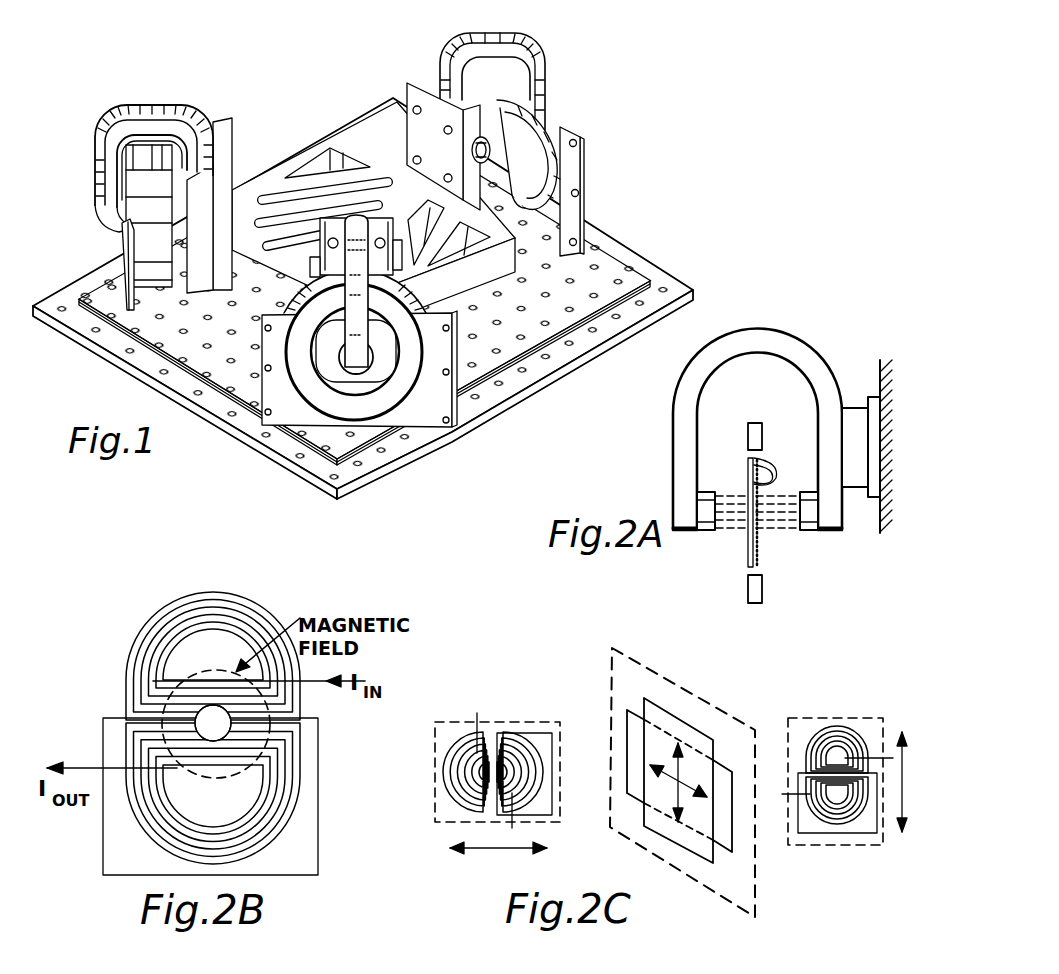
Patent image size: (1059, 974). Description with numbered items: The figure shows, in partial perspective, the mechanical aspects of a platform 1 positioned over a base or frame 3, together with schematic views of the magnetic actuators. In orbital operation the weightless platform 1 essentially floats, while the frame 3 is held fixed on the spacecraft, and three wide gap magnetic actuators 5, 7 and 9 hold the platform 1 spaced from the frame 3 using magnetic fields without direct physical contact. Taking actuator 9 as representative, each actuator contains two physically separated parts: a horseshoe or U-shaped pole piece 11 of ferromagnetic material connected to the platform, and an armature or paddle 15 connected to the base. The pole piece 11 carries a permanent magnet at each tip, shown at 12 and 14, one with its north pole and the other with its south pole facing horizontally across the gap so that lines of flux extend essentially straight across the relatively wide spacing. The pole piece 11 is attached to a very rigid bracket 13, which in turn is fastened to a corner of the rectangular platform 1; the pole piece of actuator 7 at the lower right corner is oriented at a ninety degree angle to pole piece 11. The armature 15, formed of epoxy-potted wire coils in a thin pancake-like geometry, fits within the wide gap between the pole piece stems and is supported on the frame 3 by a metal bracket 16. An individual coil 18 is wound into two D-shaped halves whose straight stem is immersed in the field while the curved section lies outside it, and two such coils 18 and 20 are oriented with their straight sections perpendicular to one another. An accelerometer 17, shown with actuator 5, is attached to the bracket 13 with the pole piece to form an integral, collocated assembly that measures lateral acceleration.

In FIG. 1, the platform 1 is at (314, 136).
In FIG. 2A, the platform 1 is at (879, 362).
In FIG. 1, the base or frame 3 is at (507, 382).
In FIG. 1, the wide gap magnetic actuator 5 is at (450, 42).
In FIG. 1, the wide gap magnetic actuator 7 is at (455, 436).
In FIG. 1, the wide gap magnetic actuator 9 is at (86, 152).
In FIG. 1, the horseshoe or U-shaped pole piece 11 is at (100, 200).
In FIG. 2A, the horseshoe or U-shaped pole piece 11 is at (675, 426).
In FIG. 2A, the permanent magnet 12 is at (802, 536).
In FIG. 2B, the permanent magnet 12 is at (150, 718).
In FIG. 1, the bracket 13 is at (228, 264).
In FIG. 2A, the bracket 13 is at (860, 495).
In FIG. 2A, the permanent magnet 14 is at (705, 536).
In FIG. 2B, the permanent magnet 14 is at (213, 723).
In FIG. 1, the armature or paddle 15 is at (160, 211).
In FIG. 2A, the armature or paddle 15 is at (758, 422).
In FIG. 2C, the armature or paddle 15 is at (608, 652).
In FIG. 1, the metal bracket 16 is at (122, 253).
In FIG. 1, the accelerometer 17 is at (543, 113).
In FIG. 2A, the coil 18 is at (749, 462).
In FIG. 2B, the coil 18 is at (148, 628).
In FIG. 2C, the coil 18 is at (838, 722).
In FIG. 2A, the coil 20 is at (775, 462).
In FIG. 2C, the coil 20 is at (440, 774).